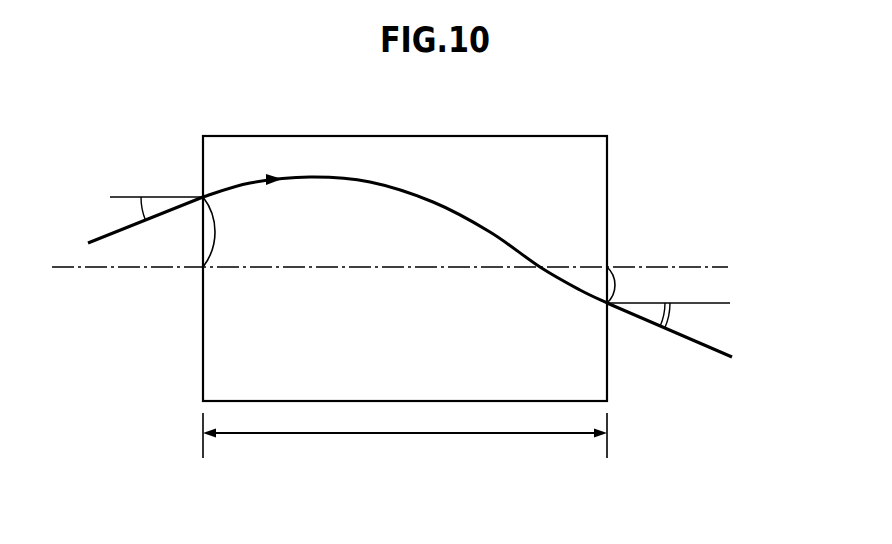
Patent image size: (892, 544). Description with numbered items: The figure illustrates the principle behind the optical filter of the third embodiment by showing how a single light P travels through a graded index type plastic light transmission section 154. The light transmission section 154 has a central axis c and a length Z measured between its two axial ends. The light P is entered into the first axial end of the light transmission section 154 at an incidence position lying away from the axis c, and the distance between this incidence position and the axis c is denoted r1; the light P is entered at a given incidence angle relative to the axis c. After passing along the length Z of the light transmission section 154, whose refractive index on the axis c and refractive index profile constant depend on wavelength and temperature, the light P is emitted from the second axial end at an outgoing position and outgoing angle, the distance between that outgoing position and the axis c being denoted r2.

The light transmission section 154 is at (203, 346).
The light P is at (350, 181).
The axis c is at (400, 266).
The length of the light transmission section Z is at (405, 443).
The distance between the incidence position and the axis r1 is at (223, 232).
The distance between the outgoing position and the axis r2 is at (624, 285).